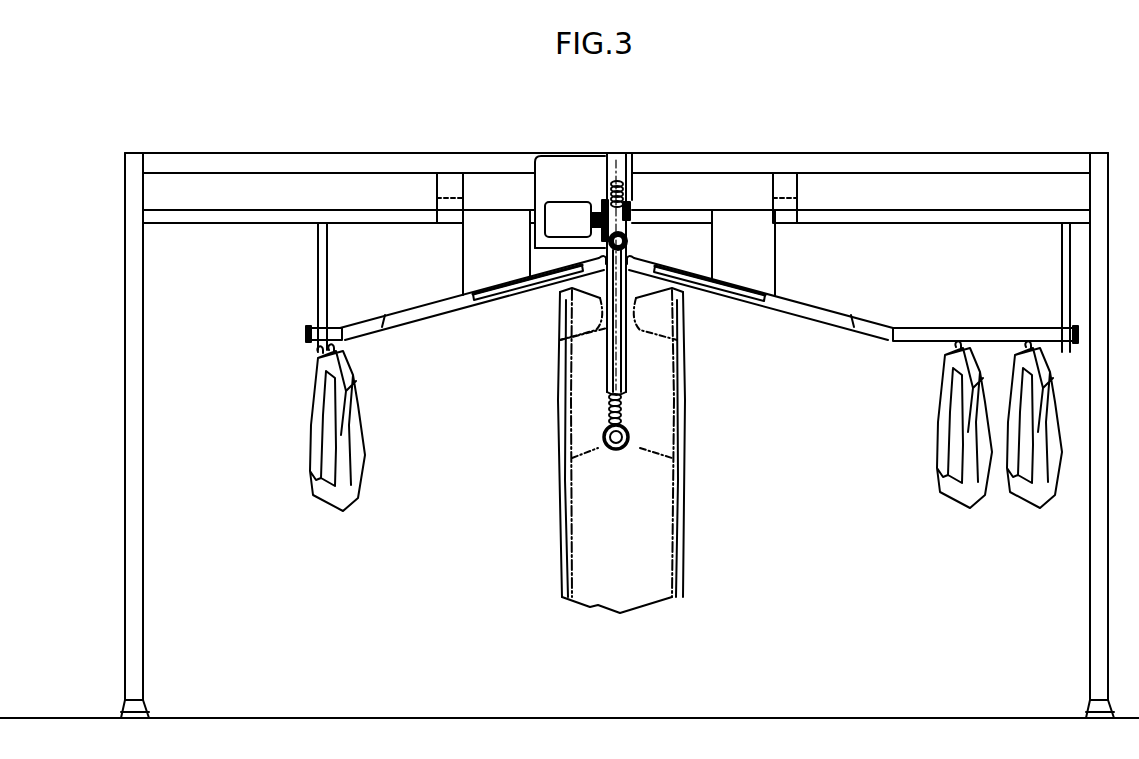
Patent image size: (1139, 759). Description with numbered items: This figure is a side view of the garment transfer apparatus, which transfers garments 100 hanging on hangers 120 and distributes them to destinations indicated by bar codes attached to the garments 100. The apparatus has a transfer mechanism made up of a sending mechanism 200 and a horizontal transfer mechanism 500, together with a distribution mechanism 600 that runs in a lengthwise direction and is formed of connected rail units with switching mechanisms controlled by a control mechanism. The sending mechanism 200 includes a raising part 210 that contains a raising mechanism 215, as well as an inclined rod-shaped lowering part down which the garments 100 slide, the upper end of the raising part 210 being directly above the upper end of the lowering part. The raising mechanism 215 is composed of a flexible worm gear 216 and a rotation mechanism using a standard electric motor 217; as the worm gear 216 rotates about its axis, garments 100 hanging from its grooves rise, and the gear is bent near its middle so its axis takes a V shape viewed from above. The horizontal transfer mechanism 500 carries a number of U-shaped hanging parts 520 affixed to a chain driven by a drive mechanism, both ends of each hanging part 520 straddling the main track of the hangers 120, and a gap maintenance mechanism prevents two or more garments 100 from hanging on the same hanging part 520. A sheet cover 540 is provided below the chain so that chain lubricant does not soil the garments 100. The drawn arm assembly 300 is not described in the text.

The garments 100 is at (330, 517).
The hangers 120 is at (343, 330).
The sending mechanism 200 is at (641, 247).
The raising part 210 is at (645, 359).
The raising mechanism 215 is at (565, 362).
The worm gear 216 is at (608, 406).
The electric motor 217 is at (548, 465).
The swing arm assembly 300 is at (545, 266).
The horizontal transfer mechanism 500 is at (595, 196).
The hanging parts 520 is at (556, 216).
The sheet cover 540 is at (546, 299).
The distribution mechanism 600 is at (820, 427).